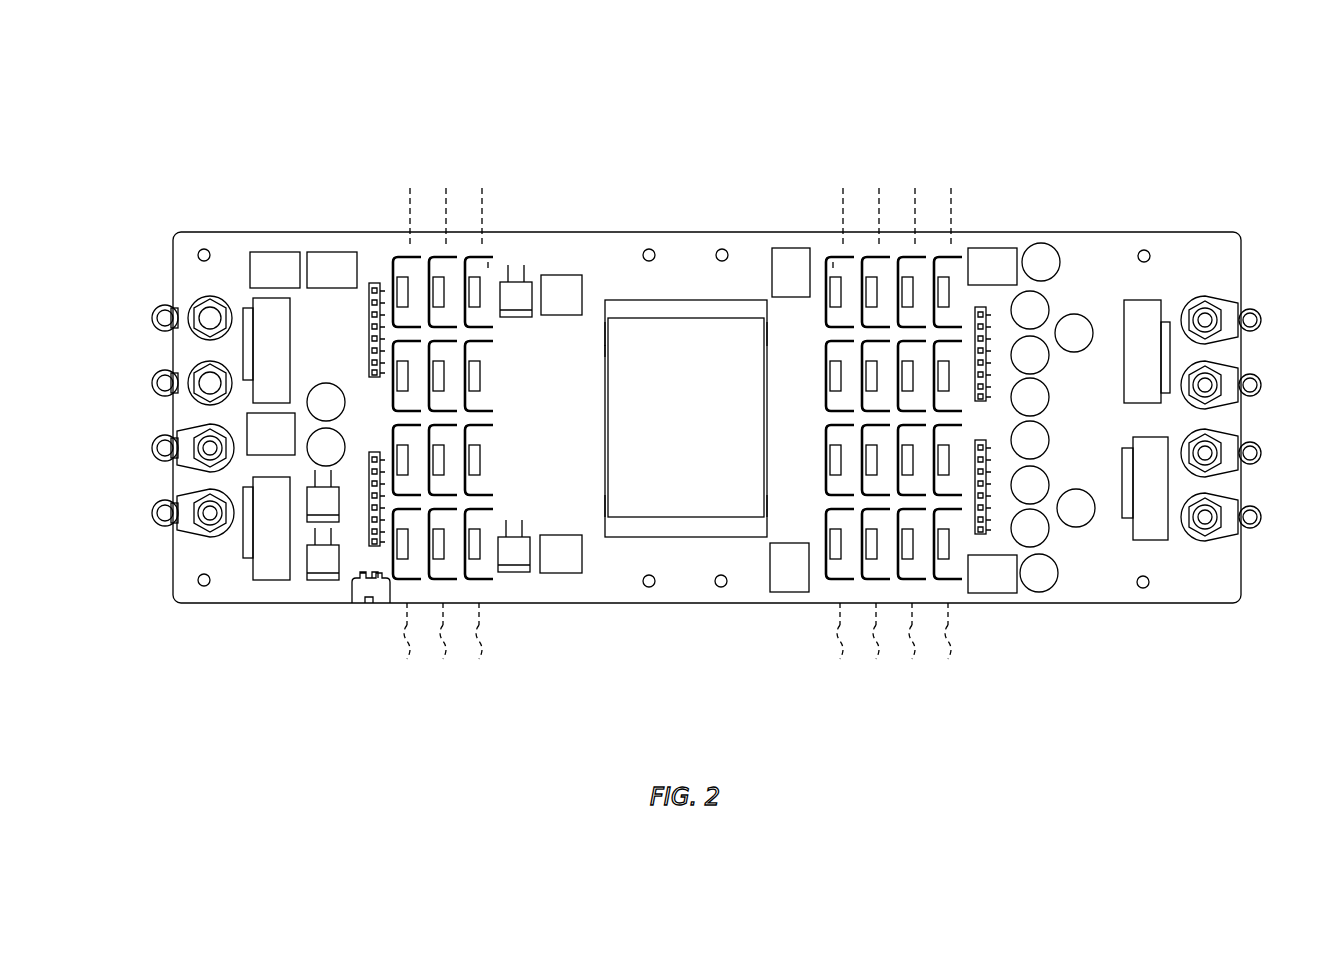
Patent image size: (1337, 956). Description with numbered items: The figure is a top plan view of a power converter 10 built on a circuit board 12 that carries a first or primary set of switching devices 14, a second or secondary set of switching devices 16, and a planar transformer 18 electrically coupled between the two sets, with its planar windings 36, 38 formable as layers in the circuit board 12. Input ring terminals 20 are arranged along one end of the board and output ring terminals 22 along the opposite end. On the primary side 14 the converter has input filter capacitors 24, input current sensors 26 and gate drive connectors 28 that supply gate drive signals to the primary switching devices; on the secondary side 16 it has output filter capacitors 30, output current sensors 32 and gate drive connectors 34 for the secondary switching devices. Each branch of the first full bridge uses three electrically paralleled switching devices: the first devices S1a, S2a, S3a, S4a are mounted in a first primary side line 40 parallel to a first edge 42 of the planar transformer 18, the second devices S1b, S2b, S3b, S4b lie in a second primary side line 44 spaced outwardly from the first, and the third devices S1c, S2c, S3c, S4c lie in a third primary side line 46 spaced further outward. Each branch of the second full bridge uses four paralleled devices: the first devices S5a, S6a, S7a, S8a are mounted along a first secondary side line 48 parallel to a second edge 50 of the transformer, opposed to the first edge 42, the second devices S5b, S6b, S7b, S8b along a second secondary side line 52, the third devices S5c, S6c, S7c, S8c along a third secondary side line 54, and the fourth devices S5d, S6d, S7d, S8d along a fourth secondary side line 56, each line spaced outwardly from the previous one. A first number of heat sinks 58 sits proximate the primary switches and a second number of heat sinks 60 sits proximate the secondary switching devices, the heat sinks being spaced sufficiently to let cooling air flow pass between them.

The power converter 10 is at (1250, 148).
The circuit board 12 is at (1243, 255).
The first or primary set of switching devices 14 is at (508, 152).
The second or secondary set of switching devices 16 is at (978, 150).
The planar transformer 18 is at (680, 335).
The input ring terminals 20 is at (150, 322).
The output ring terminals 22 is at (1262, 322).
The input filter capacitors 24 is at (326, 445).
The input current sensors 26 is at (270, 567).
The gate drive connectors 28 is at (370, 315).
The output filter capacitors 30 is at (1040, 583).
The output current sensors 32 is at (1128, 443).
The gate drive connectors 34 is at (990, 360).
The planar winding 36 is at (565, 540).
The planar winding 38 is at (790, 545).
The first primary side line 40 is at (470, 654).
The first edge 42 is at (605, 357).
The second primary side line 44 is at (434, 654).
The third primary side line 46 is at (398, 654).
The first secondary side line 48 is at (830, 654).
The second edge 50 is at (769, 350).
The second secondary side line 52 is at (866, 654).
The third secondary side line 54 is at (902, 654).
The fourth secondary side line 56 is at (938, 654).
The heat sinks 58 is at (490, 265).
The heat sinks 60 is at (835, 265).
The switching device S1a is at (480, 282).
The switching device S1b is at (443, 282).
The switching device S1c is at (407, 282).
The switching device S2a is at (472, 385).
The switching device S2b is at (437, 376).
The switching device S2c is at (403, 368).
The switching device S3a is at (472, 468).
The switching device S3b is at (437, 460).
The switching device S3c is at (403, 451).
The switching device S4a is at (476, 555).
The switching device S4b is at (440, 555).
The switching device S4c is at (404, 555).
The switching device S5a is at (838, 282).
The switching device S5b is at (873, 282).
The switching device S5c is at (909, 282).
The switching device S5d is at (945, 282).
The switching device S6a is at (838, 368).
The switching device S6b is at (872, 378).
The switching device S6c is at (908, 385).
The switching device S6d is at (945, 380).
The switching device S7a is at (838, 452).
The switching device S7b is at (872, 462).
The switching device S7c is at (908, 469).
The switching device S7d is at (944, 490).
The switching device S8a is at (838, 555).
The switching device S8b is at (874, 555).
The switching device S8c is at (909, 555).
The switching device S8d is at (945, 555).